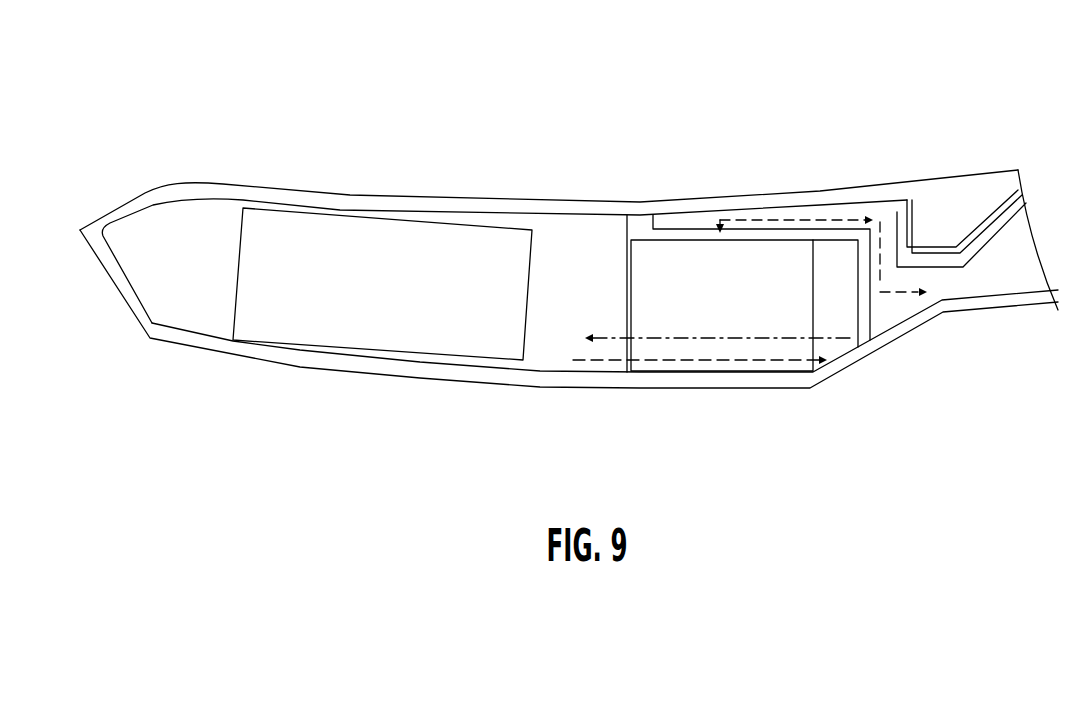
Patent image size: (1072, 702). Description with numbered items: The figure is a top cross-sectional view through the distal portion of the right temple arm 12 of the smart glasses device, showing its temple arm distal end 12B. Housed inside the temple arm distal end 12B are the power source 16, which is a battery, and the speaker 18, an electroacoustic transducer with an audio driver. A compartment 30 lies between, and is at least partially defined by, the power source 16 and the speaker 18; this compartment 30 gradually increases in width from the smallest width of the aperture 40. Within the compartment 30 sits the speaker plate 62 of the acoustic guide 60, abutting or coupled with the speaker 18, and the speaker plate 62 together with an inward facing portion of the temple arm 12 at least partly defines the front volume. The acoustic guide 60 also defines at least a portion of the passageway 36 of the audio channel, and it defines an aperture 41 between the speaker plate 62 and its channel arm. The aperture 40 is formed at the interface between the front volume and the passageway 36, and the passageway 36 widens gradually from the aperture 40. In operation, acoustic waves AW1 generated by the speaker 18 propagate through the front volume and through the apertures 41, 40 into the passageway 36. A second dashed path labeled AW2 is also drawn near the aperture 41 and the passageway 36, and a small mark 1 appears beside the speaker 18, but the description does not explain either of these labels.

The temple arm distal end 12B is at (569, 227).
The right temple arm 12 is at (950, 311).
The power source 16 is at (356, 292).
The speaker 18 is at (700, 315).
The reference mark 1 is at (749, 300).
The compartment 30 is at (191, 288).
The passageway 36 is at (1011, 249).
The aperture 40 is at (961, 282).
The aperture 41 is at (876, 210).
The acoustic guide 60 is at (968, 238).
The speaker plate 62 is at (777, 237).
The acoustic waves AW1 is at (675, 358).
The second airflow AW2 is at (800, 220).